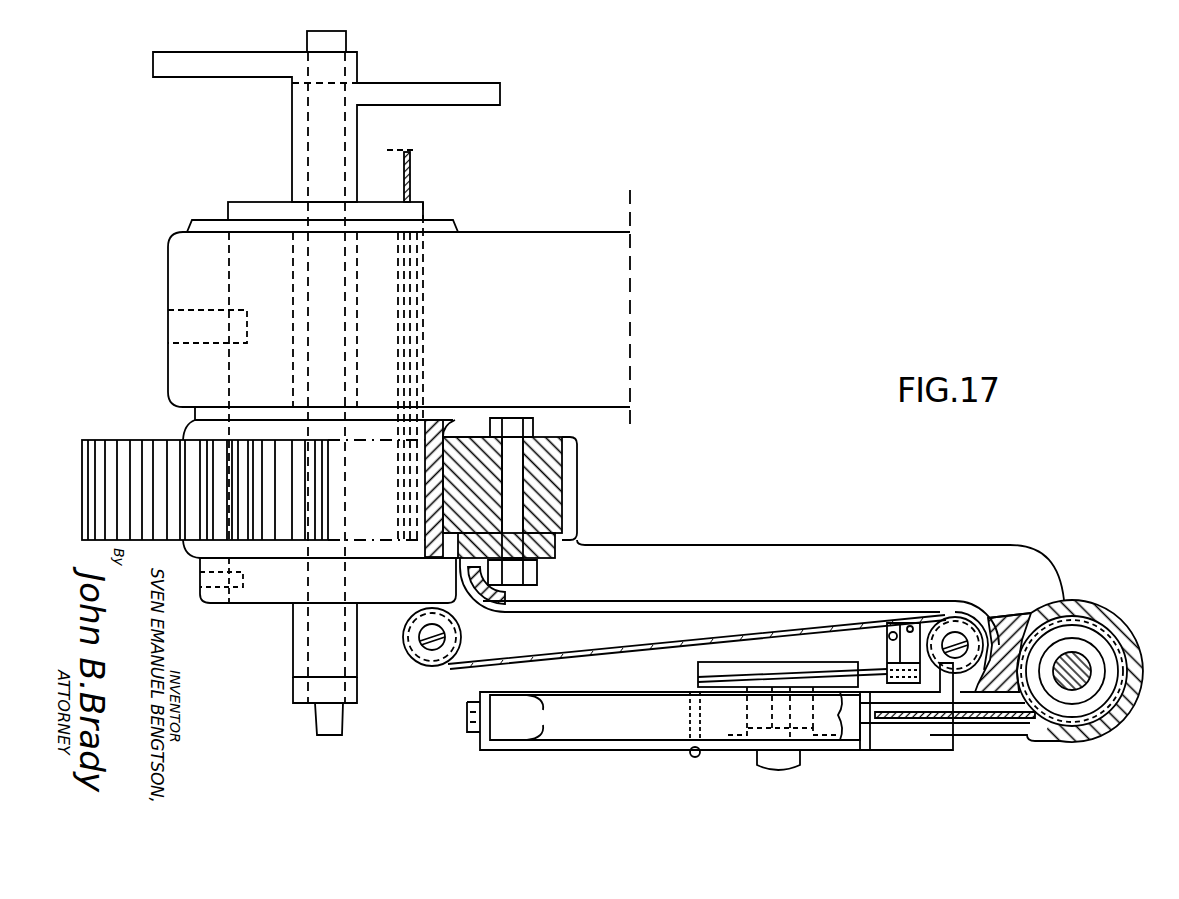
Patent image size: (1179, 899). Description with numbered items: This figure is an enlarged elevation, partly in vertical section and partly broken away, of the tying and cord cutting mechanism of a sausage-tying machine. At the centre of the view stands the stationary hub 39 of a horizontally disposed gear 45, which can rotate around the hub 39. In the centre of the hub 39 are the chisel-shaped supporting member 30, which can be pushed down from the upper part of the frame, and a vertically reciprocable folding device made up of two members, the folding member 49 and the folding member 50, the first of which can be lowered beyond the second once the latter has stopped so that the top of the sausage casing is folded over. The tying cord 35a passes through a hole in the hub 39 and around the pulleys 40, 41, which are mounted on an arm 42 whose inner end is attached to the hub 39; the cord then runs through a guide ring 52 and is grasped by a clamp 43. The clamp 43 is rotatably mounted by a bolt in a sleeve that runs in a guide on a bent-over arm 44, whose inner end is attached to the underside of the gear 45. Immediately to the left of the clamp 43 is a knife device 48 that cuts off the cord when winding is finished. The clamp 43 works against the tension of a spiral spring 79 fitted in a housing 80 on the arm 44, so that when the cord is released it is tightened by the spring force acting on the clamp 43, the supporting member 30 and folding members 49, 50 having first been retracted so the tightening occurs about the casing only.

The supporting member 30 is at (318, 722).
The tying cord 35a is at (412, 165).
The hub 39 is at (168, 256).
The pulley 40 is at (438, 668).
The pulley 41 is at (965, 628).
The arm 42 is at (700, 622).
The clamp 43 is at (830, 718).
The bent-over arm 44 is at (922, 548).
The gear 45 is at (577, 466).
The knife device 48 is at (698, 690).
The folding member 49 is at (293, 660).
The folding member 50 is at (293, 687).
The guide ring 52 is at (882, 655).
The spiral spring 79 is at (1163, 647).
The housing 80 is at (1142, 690).